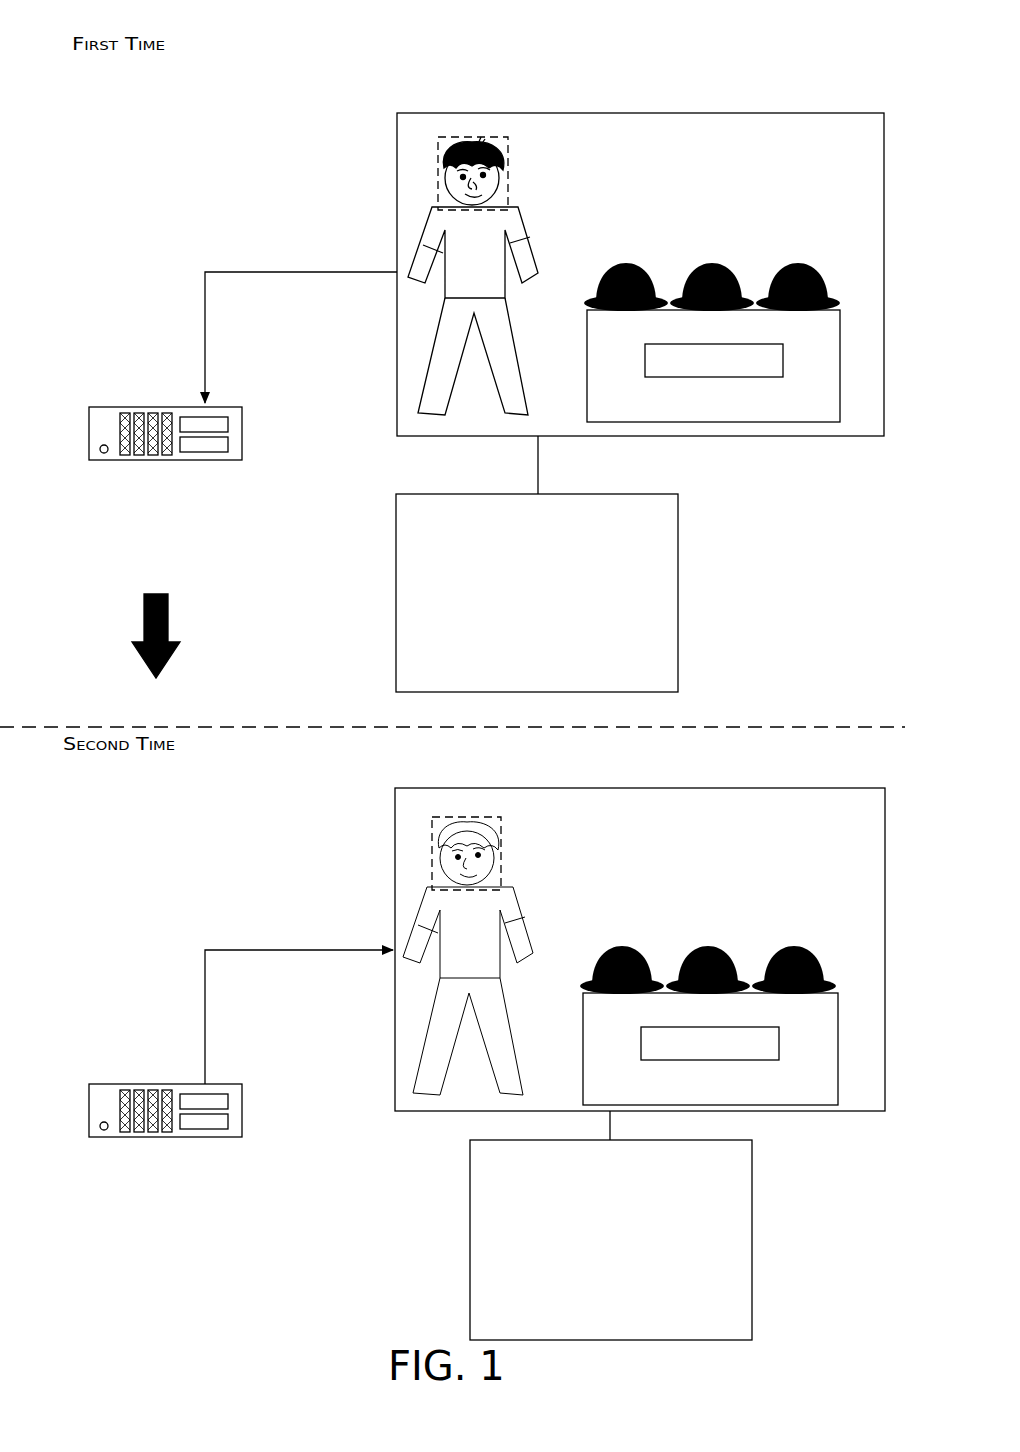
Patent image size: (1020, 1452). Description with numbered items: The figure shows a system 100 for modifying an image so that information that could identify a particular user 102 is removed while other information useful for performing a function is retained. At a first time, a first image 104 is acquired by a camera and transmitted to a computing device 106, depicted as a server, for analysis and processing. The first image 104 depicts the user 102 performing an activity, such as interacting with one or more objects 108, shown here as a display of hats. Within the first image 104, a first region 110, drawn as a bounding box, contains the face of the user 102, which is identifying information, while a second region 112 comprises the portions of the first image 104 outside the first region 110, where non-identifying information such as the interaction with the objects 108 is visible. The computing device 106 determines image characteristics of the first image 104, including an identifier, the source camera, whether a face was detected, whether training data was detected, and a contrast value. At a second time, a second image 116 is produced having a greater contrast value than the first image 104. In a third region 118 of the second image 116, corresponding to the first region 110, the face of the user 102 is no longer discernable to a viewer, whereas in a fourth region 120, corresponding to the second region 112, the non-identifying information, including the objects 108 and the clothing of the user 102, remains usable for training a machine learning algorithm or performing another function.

The system 100 is at (783, 55).
The user 102 is at (437, 227).
The first image 104 is at (640, 289).
The computing device 106 is at (231, 721).
The objects 108 is at (640, 405).
The first region 110 is at (440, 172).
The second region 112 is at (597, 177).
The second image 116 is at (640, 952).
The third region 118 is at (430, 852).
The fourth region 120 is at (587, 858).